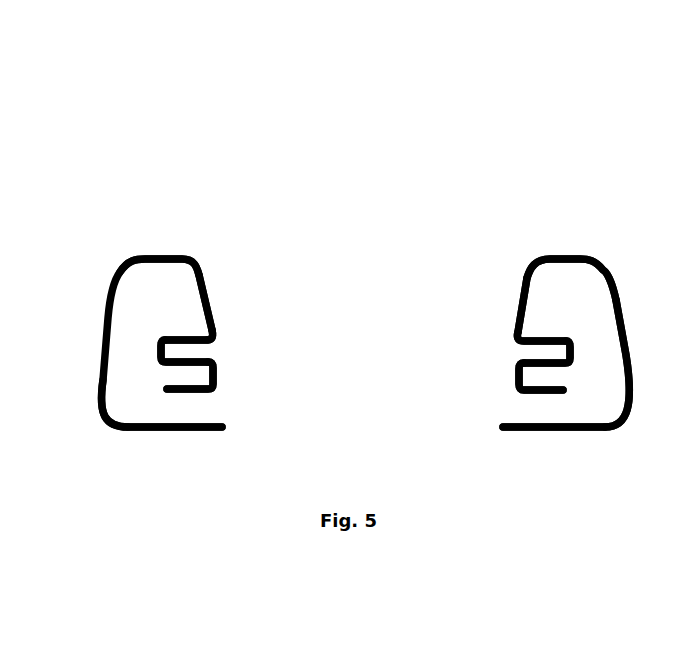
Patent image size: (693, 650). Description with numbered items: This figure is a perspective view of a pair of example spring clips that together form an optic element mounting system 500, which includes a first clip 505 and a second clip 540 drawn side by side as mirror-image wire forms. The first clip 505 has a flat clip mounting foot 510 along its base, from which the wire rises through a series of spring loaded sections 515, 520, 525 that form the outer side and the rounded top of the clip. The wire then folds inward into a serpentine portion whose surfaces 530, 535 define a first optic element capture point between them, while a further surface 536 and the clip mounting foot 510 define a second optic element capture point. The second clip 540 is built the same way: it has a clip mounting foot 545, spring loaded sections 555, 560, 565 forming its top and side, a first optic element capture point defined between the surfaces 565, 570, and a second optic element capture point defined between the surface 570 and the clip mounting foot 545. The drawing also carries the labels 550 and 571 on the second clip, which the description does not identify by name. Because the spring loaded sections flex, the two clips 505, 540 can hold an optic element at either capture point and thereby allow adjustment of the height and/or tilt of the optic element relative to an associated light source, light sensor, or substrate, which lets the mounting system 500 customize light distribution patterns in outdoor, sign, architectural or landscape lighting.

The optic element mounting system 500 is at (506, 151).
The first clip 505 is at (633, 408).
The clip mounting foot 510 is at (556, 432).
The spring loaded section 515 is at (623, 336).
The spring loaded section 520 is at (568, 252).
The spring loaded section 525 is at (522, 303).
The surface 530 is at (540, 338).
The surface 535 is at (542, 354).
The surface 536 is at (534, 397).
The second clip 540 is at (100, 418).
The clip mounting foot 545 is at (160, 433).
The first clip 550 is at (104, 330).
The spring loaded section 555 is at (167, 254).
The spring loaded section 560 is at (207, 286).
The spring loaded section 565 is at (188, 338).
The surface 570 is at (198, 363).
The terminal segment of first clip 571 is at (196, 394).